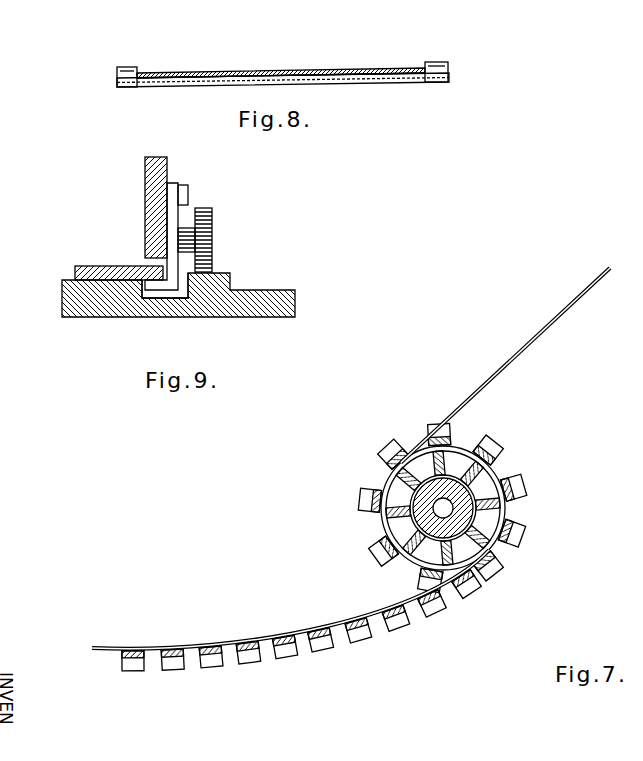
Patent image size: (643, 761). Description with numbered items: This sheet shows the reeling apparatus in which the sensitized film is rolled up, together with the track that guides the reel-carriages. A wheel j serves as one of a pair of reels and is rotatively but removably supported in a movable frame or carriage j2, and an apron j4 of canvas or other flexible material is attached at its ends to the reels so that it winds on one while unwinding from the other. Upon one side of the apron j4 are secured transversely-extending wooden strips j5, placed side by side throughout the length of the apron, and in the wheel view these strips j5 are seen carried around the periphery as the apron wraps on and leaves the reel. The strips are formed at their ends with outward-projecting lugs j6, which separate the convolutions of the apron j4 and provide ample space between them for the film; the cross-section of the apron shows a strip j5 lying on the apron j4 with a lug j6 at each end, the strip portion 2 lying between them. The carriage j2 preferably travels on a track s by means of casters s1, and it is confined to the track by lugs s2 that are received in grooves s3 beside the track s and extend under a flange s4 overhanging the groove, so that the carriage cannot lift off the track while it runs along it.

In FIG. 7, the wheel j is at (460, 467).
In FIG. 9, the carriage j2 is at (150, 199).
In FIG. 8, the apron j4 is at (218, 72).
In FIG. 7, the apron j4 is at (288, 626).
In FIG. 8, the wooden strips j5 is at (283, 73).
In FIG. 7, the wooden strips j5 is at (387, 622).
In FIG. 8, the lugs j6 is at (457, 46).
In FIG. 7, the lugs j6 is at (497, 572).
In FIG. 8, the strip 2 is at (335, 72).
In FIG. 9, the track s is at (232, 278).
In FIG. 9, the casters s1 is at (215, 236).
In FIG. 9, the lugs s2 is at (173, 240).
In FIG. 9, the grooves s3 is at (180, 293).
In FIG. 9, the flange s4 is at (128, 275).